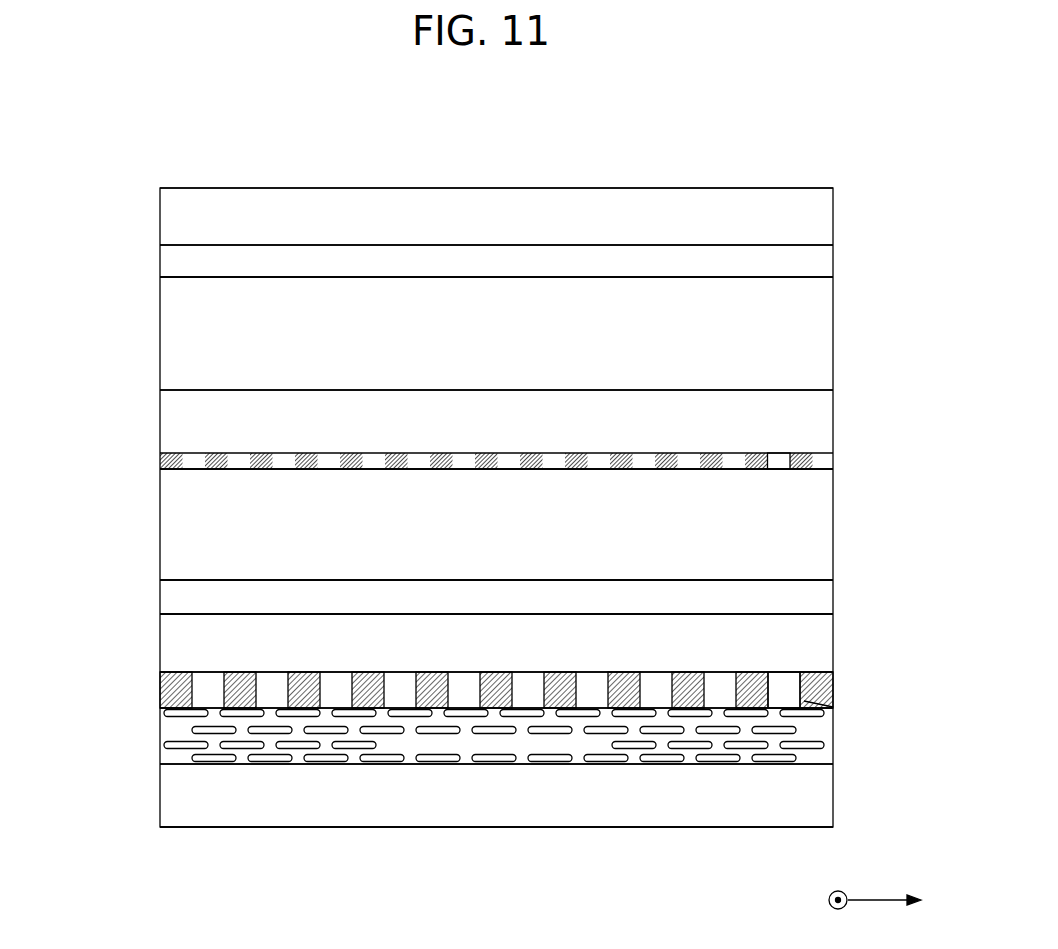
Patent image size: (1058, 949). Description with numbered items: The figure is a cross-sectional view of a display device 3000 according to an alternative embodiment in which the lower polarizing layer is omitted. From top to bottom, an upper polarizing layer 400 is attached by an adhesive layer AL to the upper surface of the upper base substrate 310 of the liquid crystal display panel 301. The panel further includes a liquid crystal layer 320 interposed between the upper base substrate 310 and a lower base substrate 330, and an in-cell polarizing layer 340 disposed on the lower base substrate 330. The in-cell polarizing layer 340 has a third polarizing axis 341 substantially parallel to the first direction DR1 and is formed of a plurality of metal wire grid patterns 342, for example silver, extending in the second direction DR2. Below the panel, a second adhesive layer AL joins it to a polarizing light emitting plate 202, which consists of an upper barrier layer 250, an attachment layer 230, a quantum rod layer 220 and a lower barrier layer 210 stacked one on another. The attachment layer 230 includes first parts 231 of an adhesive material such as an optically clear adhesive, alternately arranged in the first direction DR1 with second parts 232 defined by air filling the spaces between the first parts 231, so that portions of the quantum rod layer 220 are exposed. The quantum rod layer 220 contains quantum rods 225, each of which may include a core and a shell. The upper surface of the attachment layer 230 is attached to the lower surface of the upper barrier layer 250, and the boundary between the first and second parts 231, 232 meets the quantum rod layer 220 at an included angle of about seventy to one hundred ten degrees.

The display device 3000 is at (733, 156).
The upper polarizing layer 400 is at (171, 214).
The adhesive layer AL is at (171, 259).
The upper base substrate 310 is at (171, 330).
The liquid crystal layer 320 is at (171, 418).
The in-cell polarizing layer 340 is at (159, 459).
The third polarizing axis 341 is at (933, 460).
The wire grid patterns 342 is at (777, 452).
The lower base substrate 330 is at (171, 523).
The liquid crystal display panel 301 is at (76, 327).
The upper barrier layer 250 is at (171, 639).
The attachment layer 230 is at (159, 688).
The first part 231 is at (833, 683).
The second part 232 is at (788, 680).
The quantum rod layer 220 is at (159, 737).
The quantum rod 225 is at (818, 744).
The lower barrier layer 210 is at (171, 794).
The polarizing light emitting plate 202 is at (76, 635).
The first direction DR1 is at (890, 887).
The second direction DR2 is at (839, 889).